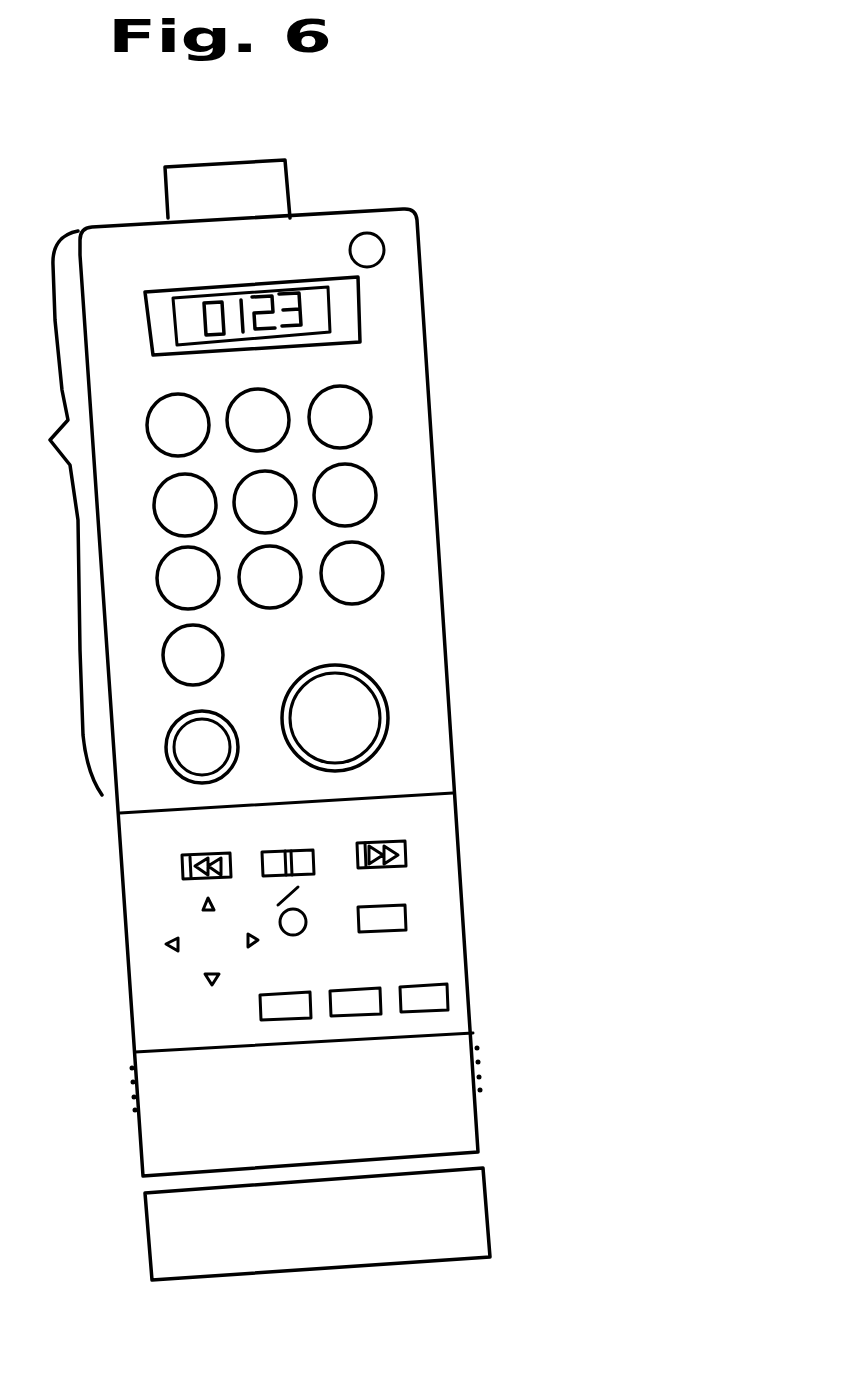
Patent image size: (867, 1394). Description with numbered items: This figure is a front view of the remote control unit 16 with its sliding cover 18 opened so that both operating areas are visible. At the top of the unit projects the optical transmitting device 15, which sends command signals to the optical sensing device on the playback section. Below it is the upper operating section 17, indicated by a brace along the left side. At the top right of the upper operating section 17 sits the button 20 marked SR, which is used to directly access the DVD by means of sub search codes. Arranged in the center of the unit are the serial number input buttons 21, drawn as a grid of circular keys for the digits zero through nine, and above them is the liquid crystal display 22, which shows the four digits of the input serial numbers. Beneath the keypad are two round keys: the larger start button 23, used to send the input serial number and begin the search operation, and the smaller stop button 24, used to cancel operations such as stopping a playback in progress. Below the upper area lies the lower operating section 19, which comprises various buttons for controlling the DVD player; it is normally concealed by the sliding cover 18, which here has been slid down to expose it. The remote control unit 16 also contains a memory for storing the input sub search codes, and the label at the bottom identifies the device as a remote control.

The optical transmitting device 15 is at (222, 175).
The remote control unit 16 is at (313, 206).
The upper operating section 17 is at (53, 513).
The sliding cover 18 is at (165, 1078).
The lower operating section 19 is at (448, 911).
The button marked SR 20 is at (384, 250).
The serial number input buttons 21 is at (388, 477).
The liquid crystal display 22 is at (366, 311).
The start button 23 is at (392, 707).
The stop button 24 is at (186, 748).